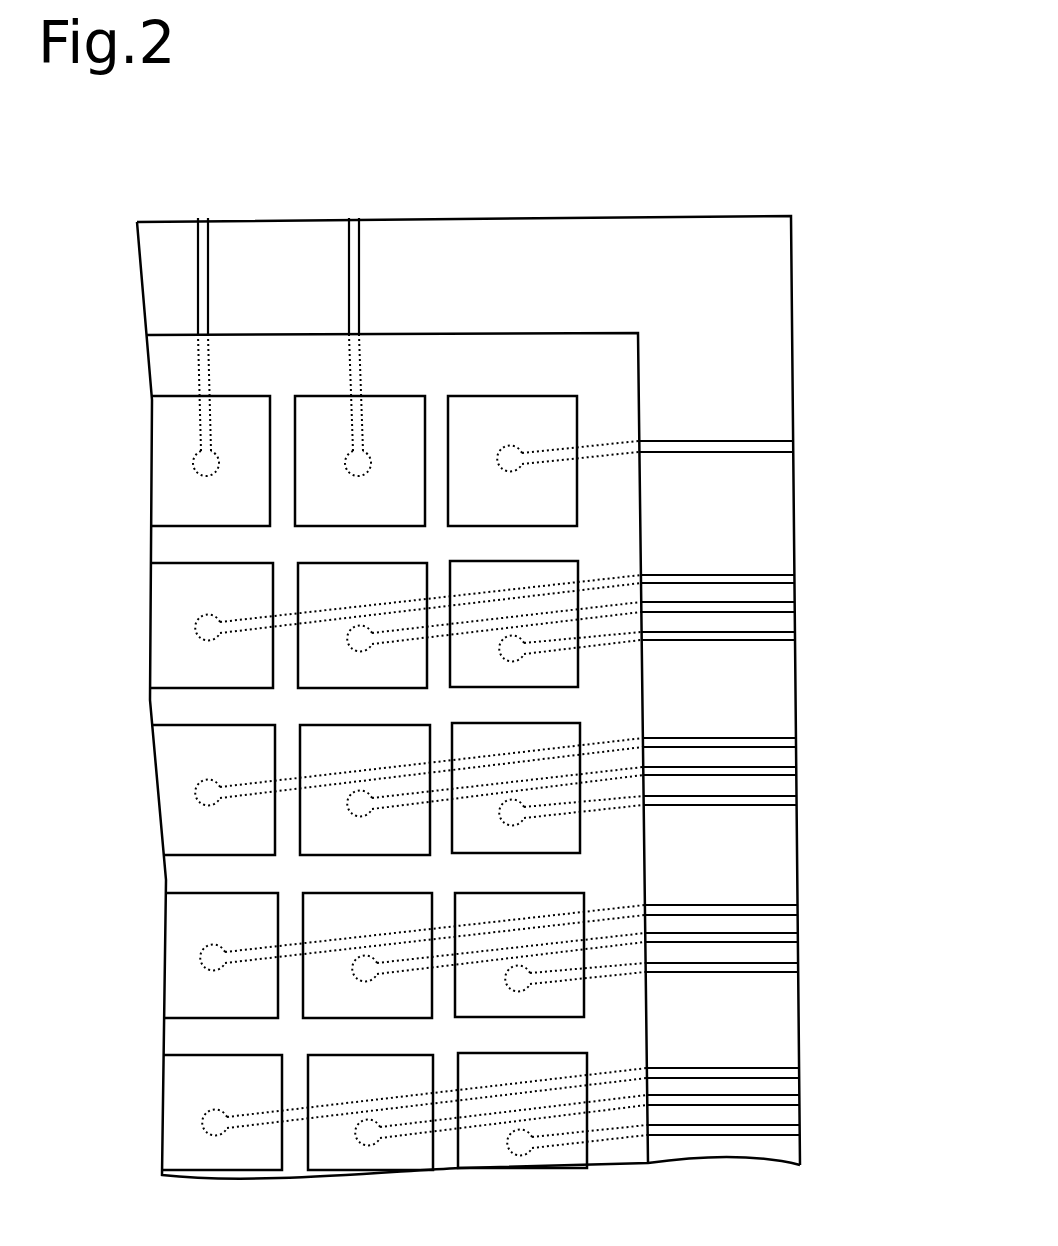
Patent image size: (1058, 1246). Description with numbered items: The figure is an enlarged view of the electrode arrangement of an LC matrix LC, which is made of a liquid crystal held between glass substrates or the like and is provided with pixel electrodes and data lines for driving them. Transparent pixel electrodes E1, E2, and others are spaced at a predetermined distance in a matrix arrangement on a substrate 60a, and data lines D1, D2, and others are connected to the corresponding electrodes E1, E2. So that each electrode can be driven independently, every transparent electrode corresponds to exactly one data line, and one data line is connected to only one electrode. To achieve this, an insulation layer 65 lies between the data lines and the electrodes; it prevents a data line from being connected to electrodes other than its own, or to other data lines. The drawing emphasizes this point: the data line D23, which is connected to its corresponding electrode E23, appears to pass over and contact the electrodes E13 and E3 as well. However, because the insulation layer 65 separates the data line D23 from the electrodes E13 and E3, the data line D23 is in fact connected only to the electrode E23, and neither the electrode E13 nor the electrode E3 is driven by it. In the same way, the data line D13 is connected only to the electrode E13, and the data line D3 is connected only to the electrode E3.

The LC matrix LC is at (865, 133).
The substrate 60a is at (682, 218).
The insulation layer 65 is at (435, 347).
The pixel electrode E1 is at (527, 407).
The pixel electrode E2 is at (570, 672).
The pixel electrode E3 is at (573, 838).
The pixel electrode E13 is at (311, 842).
The pixel electrode E23 is at (175, 768).
The data line D1 is at (775, 441).
The data line D2 is at (769, 576).
The data line D3 is at (760, 806).
The data line D13 is at (769, 776).
The data line D23 is at (771, 742).